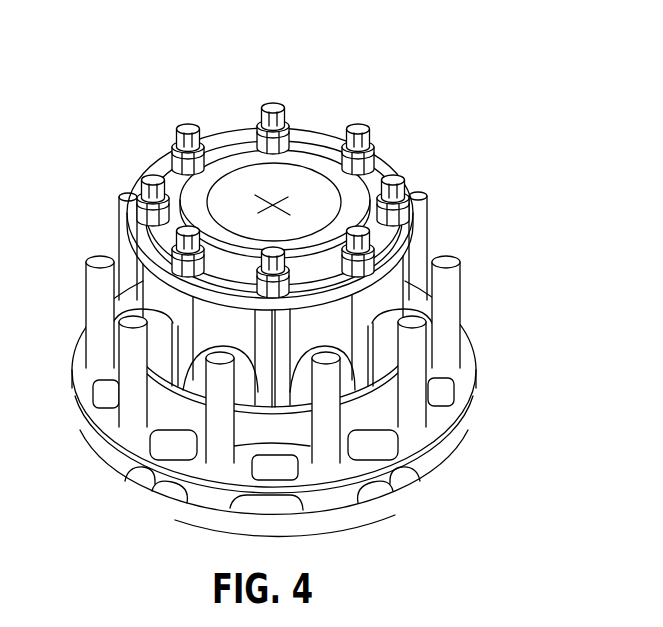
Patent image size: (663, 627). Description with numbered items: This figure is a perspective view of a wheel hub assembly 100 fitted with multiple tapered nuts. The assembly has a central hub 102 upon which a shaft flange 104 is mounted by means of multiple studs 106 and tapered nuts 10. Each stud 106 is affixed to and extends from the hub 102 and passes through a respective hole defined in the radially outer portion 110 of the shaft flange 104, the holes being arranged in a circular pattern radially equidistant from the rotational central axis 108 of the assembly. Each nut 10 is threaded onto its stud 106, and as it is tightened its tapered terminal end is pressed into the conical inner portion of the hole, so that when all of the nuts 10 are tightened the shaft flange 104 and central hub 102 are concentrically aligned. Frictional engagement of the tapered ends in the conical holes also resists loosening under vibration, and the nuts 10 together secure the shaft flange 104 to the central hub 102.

The wheel hub assembly 100 is at (442, 93).
The central hub 102 is at (330, 328).
The shaft flange 104 is at (220, 187).
The stud 106 is at (185, 124).
The rotational central axis 108 is at (273, 196).
The radially outer portion 110 is at (387, 237).
The tapered nut 10 is at (178, 155).